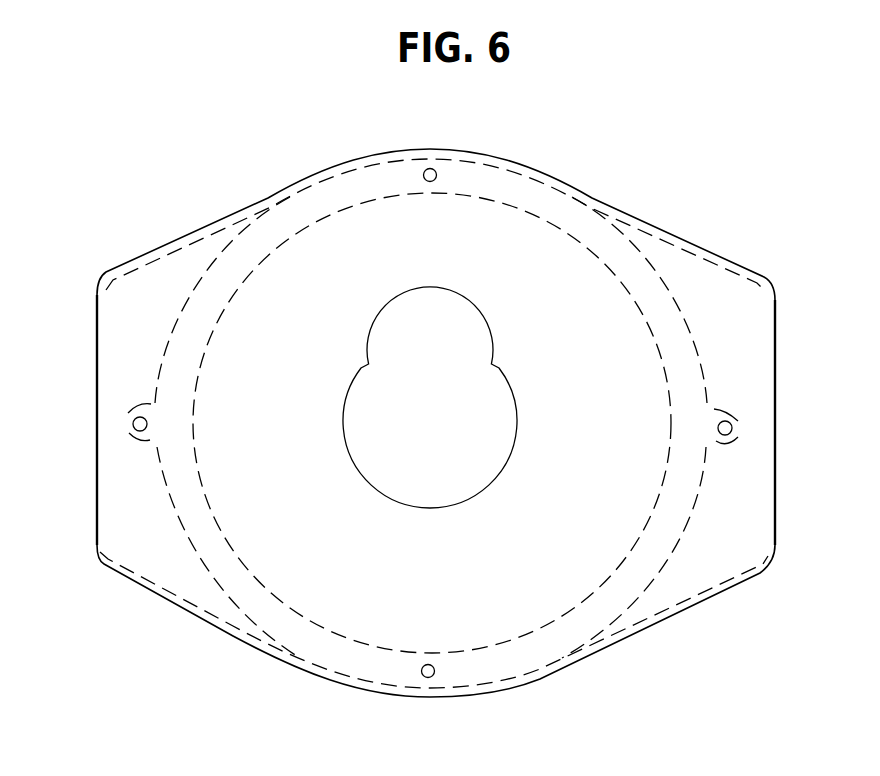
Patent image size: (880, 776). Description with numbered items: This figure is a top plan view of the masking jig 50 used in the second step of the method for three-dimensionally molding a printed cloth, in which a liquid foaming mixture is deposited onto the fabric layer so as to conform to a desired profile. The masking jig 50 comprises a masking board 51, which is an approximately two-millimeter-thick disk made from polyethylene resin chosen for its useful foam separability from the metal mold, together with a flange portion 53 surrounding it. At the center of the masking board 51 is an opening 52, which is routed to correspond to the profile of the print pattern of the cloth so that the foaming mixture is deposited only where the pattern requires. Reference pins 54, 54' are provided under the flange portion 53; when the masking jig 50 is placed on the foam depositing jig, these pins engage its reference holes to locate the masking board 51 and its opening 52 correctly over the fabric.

The masking jig 50 is at (636, 122).
The masking board 51 is at (482, 600).
The opening 52 is at (400, 346).
The flange portion 53 is at (160, 284).
The reference pin 54 is at (769, 513).
The reference pin 54' is at (88, 511).